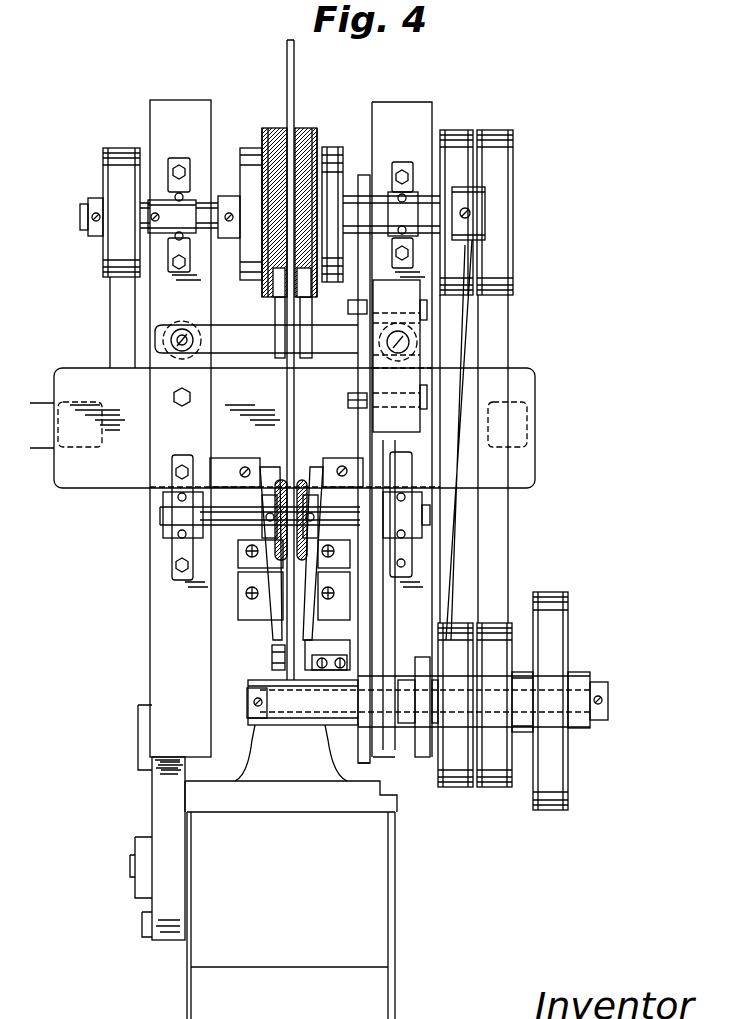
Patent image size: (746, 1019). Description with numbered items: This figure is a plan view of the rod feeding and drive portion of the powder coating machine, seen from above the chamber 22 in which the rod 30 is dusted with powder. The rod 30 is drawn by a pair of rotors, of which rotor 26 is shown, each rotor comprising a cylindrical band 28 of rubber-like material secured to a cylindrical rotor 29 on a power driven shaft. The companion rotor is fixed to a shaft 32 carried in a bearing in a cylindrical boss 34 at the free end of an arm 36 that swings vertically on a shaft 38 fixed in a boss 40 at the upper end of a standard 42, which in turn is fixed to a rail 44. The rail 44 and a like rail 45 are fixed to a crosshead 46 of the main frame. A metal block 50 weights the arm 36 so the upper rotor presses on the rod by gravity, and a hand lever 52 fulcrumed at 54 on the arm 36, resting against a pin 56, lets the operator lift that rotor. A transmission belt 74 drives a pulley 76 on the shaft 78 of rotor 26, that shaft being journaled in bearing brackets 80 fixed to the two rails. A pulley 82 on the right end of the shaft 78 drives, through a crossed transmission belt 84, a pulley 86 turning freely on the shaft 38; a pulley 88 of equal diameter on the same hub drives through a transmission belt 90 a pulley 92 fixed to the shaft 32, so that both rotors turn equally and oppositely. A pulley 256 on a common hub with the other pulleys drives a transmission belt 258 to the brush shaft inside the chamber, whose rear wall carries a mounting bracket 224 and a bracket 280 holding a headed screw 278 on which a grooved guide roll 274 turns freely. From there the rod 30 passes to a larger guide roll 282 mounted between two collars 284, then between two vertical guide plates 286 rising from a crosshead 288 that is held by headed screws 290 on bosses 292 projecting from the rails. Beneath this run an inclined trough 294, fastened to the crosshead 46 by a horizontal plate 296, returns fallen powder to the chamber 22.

The chamber 22 is at (406, 902).
The rotor 26 is at (250, 123).
The cylindrical band 28 is at (276, 128).
The cylindrical rotor 29 is at (255, 150).
The rod 30 is at (287, 66).
The shaft 32 is at (333, 150).
The cylindrical boss 34 is at (420, 210).
The arm 36 is at (362, 180).
The shaft 38 is at (606, 700).
The boss 40 is at (406, 690).
The standard 42 is at (421, 740).
The rail 44 is at (470, 365).
The rail 45 is at (160, 366).
The crosshead 46 is at (78, 490).
The metal block 50 is at (364, 382).
The hand lever 52 is at (383, 790).
The fulcrum 54 is at (348, 402).
The pin 56 is at (160, 508).
The transmission belt 74 is at (118, 315).
The pulley 76 is at (103, 245).
The shaft 78 is at (88, 215).
The bearing brackets 80 is at (176, 196).
The pulley 82 is at (444, 132).
The transmission belt 84 is at (455, 318).
The pulley 86 is at (470, 628).
The pulley 88 is at (504, 787).
The transmission belt 90 is at (503, 548).
The pulley 92 is at (513, 265).
The bracket 224 is at (245, 603).
The pulley 256 is at (568, 775).
The transmission belt 258 is at (550, 744).
The guide roll 274 is at (275, 650).
The headed screw 278 is at (270, 663).
The bracket 280 is at (330, 652).
The guide roll 282 is at (281, 486).
The collars 284 is at (262, 468).
The vertical guide plates 286 is at (280, 360).
The crosshead 288 is at (235, 330).
The headed screws 290 is at (181, 330).
The bosses 292 is at (176, 356).
The inclined trough 294 is at (240, 580).
The horizontal plate 296 is at (215, 465).